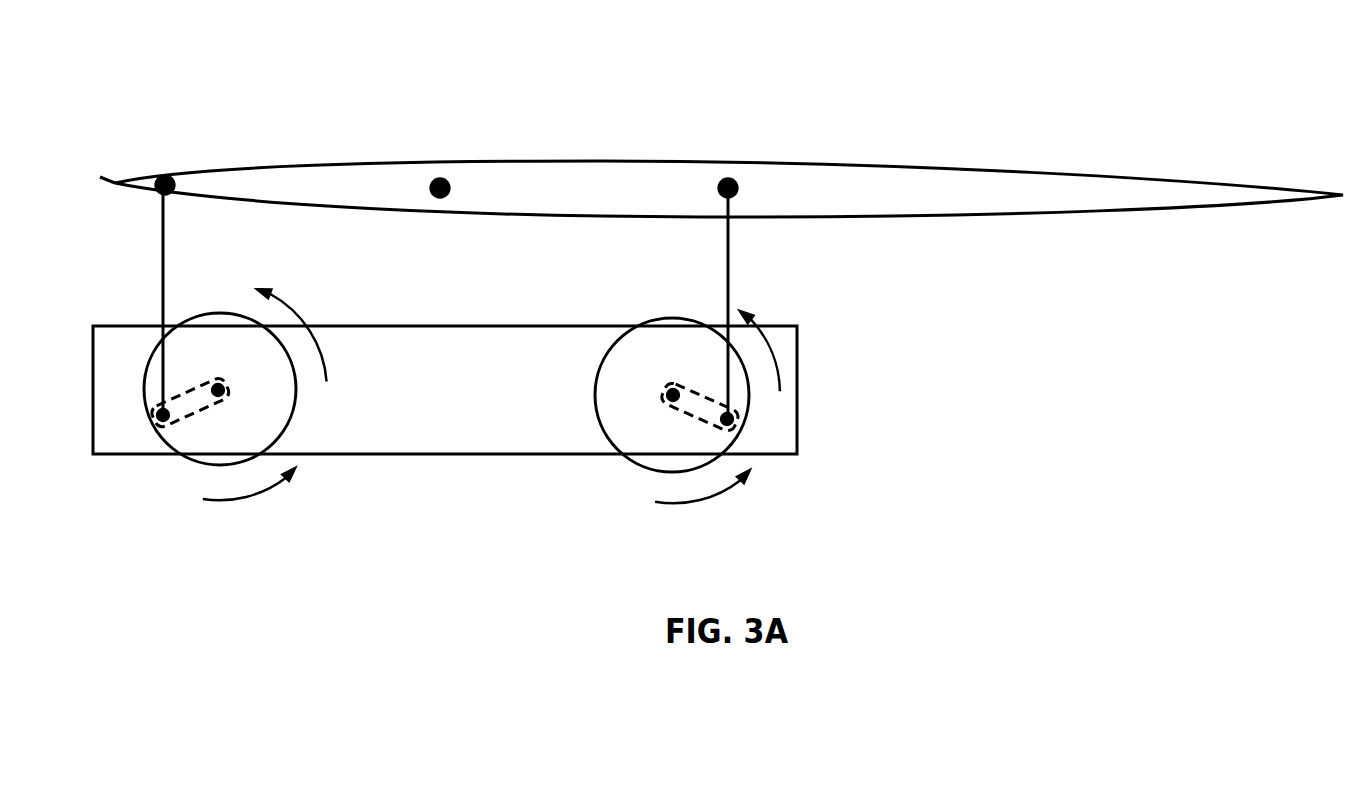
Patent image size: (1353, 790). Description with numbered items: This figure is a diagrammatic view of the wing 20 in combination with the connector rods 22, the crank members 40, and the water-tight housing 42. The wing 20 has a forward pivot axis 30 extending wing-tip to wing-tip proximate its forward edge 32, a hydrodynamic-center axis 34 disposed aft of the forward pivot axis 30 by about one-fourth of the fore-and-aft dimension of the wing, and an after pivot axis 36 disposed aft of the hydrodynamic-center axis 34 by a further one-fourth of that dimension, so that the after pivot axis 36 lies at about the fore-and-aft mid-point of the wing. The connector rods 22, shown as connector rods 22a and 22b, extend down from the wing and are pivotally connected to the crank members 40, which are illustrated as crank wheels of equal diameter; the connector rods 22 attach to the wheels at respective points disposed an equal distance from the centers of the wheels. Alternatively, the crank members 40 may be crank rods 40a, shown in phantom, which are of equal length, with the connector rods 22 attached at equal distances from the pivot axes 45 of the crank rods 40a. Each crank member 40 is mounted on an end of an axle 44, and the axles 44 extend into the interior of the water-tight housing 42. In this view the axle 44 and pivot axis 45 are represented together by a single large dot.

The wing 20 is at (608, 204).
The connector rods 22 is at (469, 302).
The connector rod 22a is at (163, 213).
The connector rod 22b is at (730, 243).
The forward pivot axis 30 is at (165, 185).
The forward edge 32 is at (117, 185).
The hydrodynamic-center axis 34 is at (440, 188).
The after pivot axis 36 is at (728, 188).
The crank members 40 is at (185, 457).
The crank rods 40a is at (205, 412).
The water-tight housing 42 is at (380, 454).
The axle 44 is at (220, 388).
The pivot axis 45 is at (673, 393).